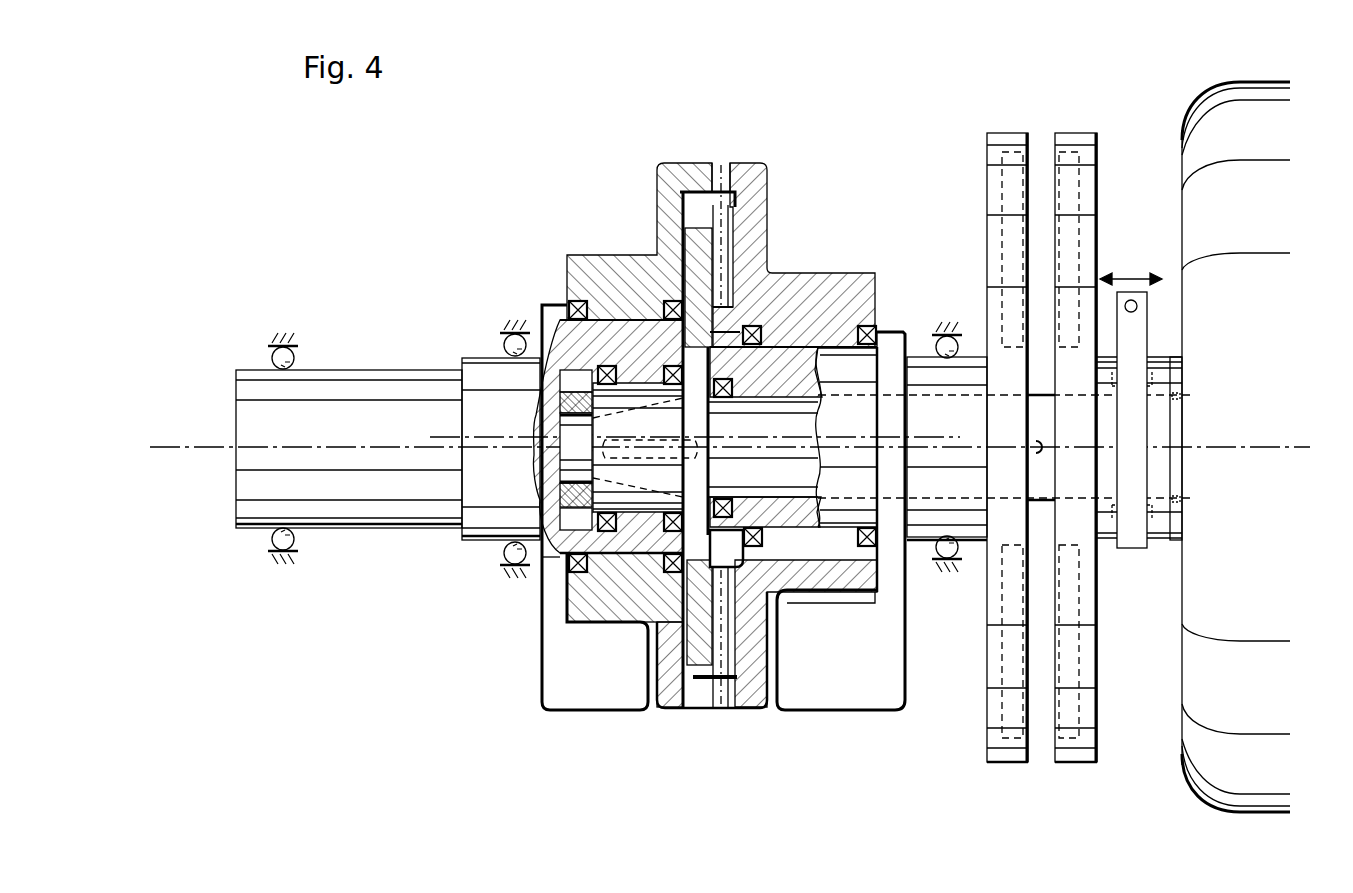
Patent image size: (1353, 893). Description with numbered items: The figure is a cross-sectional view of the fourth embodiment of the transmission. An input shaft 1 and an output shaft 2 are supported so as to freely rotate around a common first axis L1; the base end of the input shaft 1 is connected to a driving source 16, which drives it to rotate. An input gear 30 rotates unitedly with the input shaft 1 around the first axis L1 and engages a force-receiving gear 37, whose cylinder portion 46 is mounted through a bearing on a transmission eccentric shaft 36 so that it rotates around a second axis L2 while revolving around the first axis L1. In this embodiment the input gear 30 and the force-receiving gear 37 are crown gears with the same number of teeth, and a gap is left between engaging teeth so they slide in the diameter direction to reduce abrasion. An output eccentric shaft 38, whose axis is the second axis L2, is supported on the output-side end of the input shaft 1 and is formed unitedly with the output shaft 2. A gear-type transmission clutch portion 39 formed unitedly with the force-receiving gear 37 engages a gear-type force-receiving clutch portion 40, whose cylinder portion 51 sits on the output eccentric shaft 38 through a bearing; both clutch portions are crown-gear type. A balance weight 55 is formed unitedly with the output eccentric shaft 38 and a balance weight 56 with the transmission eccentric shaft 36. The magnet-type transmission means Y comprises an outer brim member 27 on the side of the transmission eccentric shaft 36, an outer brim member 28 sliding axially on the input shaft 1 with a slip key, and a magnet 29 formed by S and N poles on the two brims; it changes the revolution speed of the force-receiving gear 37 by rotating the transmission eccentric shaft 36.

The output shaft 2 is at (368, 368).
The first axis L1 is at (365, 470).
The second axis L2 is at (487, 437).
The output eccentric shaft 38 is at (638, 316).
The cylinder portion 51 is at (606, 255).
The gear-type force-receiving clutch portion 40 is at (683, 158).
The gear-type transmission clutch portion 39 is at (748, 158).
The cylinder portion 46 is at (795, 270).
The input shaft 1 is at (778, 393).
The transmission eccentric shaft 36 is at (820, 345).
The input gear 30 is at (694, 658).
The force-receiving gear 37 is at (752, 654).
The balance weight 55 is at (590, 700).
The balance weight 56 is at (862, 700).
The outer brim member 27 is at (1003, 765).
The outer brim member 28 is at (1070, 765).
The magnet 29 is at (1065, 648).
The driving source 16 is at (1178, 733).
The transmission means Y is at (1118, 166).